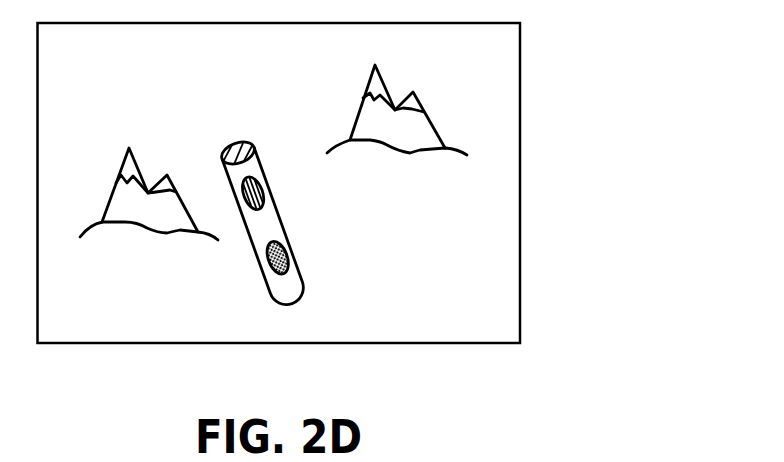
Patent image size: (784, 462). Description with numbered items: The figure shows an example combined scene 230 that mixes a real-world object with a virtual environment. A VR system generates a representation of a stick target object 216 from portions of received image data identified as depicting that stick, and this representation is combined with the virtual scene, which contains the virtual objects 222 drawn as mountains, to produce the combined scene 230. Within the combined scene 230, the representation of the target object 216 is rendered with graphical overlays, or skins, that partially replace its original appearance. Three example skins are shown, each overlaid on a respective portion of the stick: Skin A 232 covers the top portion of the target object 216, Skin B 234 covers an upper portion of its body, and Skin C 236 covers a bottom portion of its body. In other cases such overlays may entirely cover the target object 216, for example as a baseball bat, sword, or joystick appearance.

The stick target object 216 is at (250, 263).
The virtual objects 222 is at (342, 137).
The combined scene 230 is at (665, 184).
The Skin A 232 is at (257, 148).
The Skin B 234 is at (268, 205).
The Skin C 236 is at (297, 263).